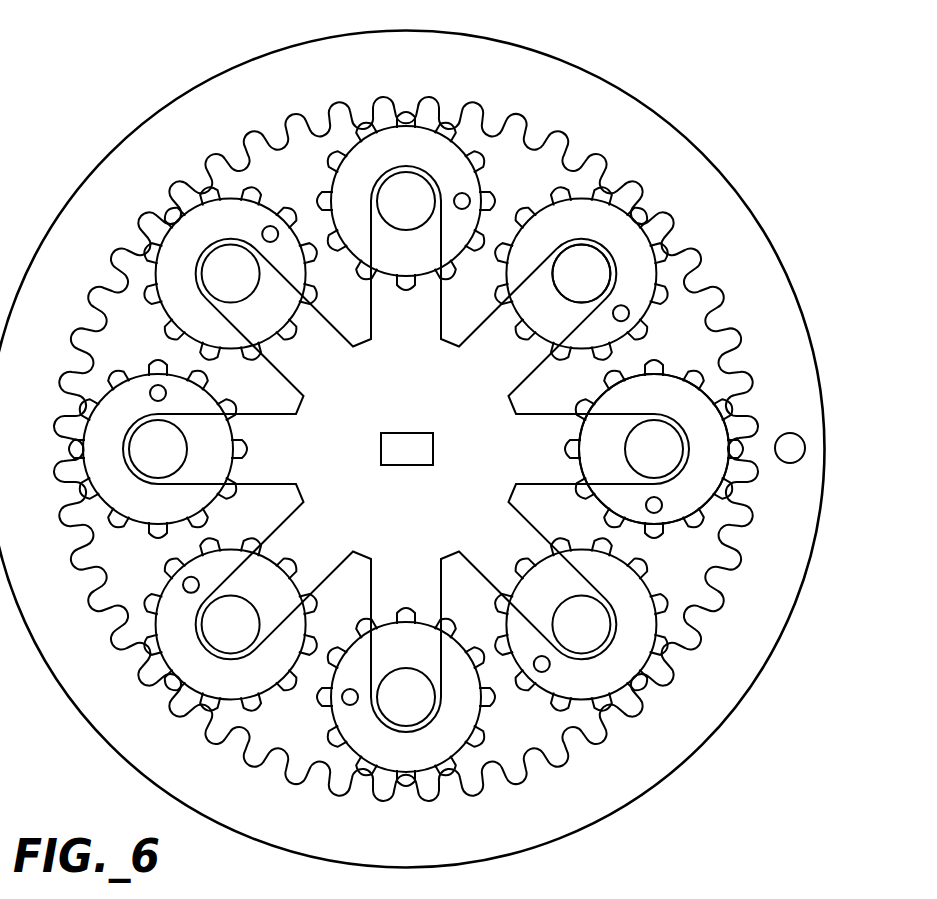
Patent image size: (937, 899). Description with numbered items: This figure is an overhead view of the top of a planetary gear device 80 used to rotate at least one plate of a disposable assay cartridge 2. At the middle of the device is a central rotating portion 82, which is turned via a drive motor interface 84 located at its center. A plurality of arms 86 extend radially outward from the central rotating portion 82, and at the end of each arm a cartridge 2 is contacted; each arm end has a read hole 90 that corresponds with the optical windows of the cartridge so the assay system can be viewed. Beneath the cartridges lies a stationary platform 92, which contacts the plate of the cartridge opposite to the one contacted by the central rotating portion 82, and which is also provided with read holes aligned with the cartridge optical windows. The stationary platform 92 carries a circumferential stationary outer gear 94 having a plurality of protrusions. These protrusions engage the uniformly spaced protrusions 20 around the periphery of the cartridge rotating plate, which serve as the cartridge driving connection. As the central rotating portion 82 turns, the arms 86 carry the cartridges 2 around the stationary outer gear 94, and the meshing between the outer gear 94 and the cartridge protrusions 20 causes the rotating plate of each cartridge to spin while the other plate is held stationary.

The disposable assay cartridge 2 is at (703, 410).
The protrusions 20 is at (700, 370).
The planetary gear device 80 is at (648, 106).
The central rotating portion 82 is at (354, 428).
The drive motor interface 84 is at (420, 445).
The arms 86 is at (458, 400).
The read hole 90 is at (582, 268).
The stationary platform 92 is at (677, 167).
The circumferential stationary outer gear 94 is at (688, 228).